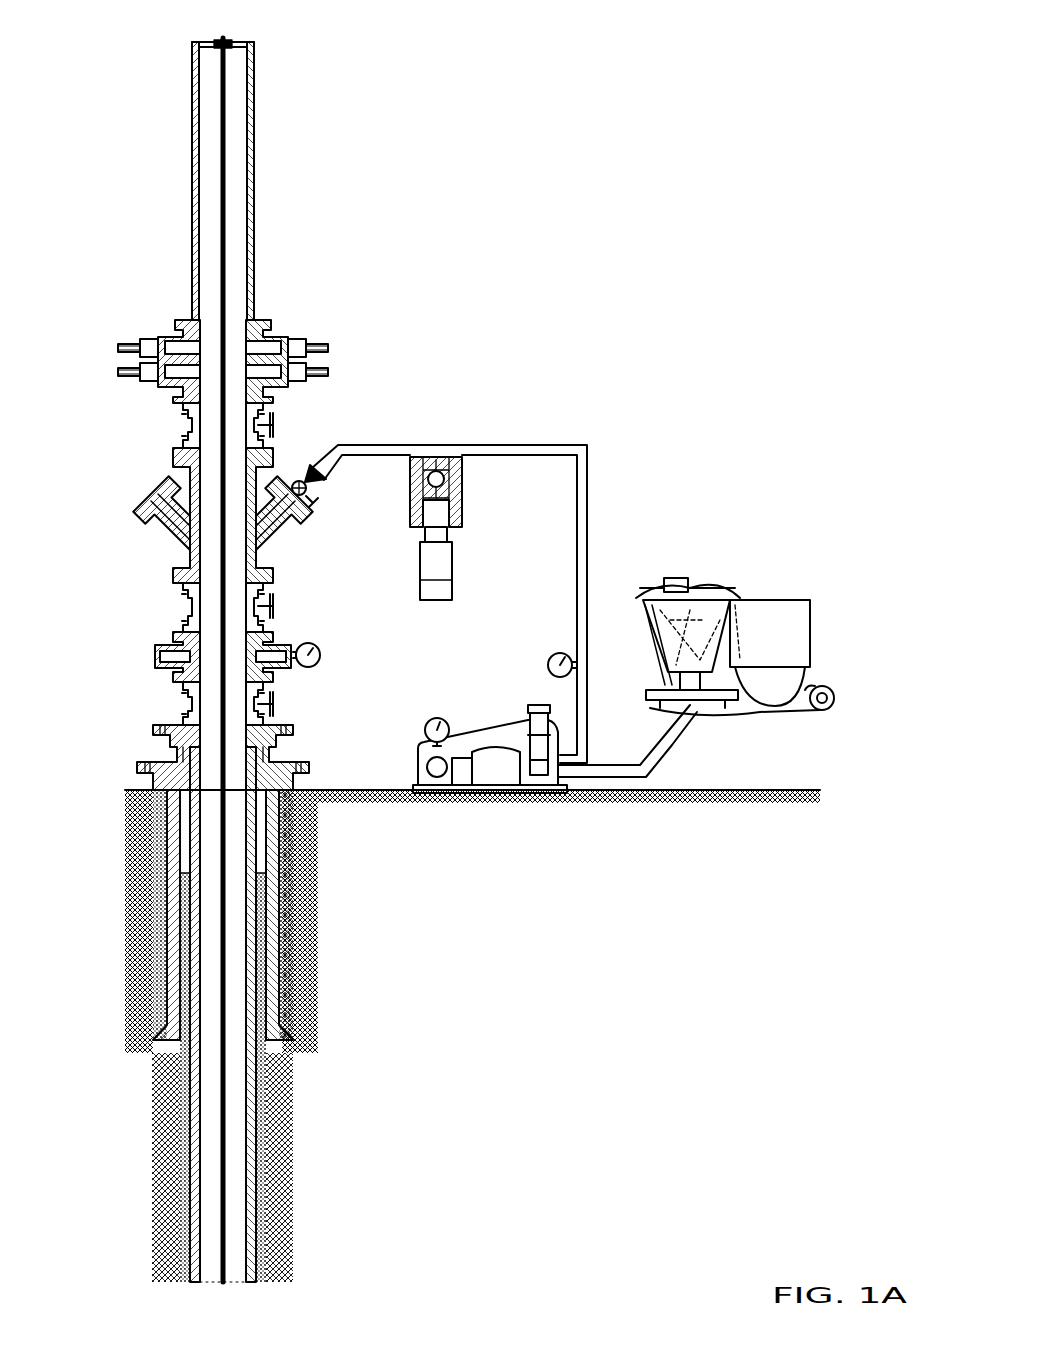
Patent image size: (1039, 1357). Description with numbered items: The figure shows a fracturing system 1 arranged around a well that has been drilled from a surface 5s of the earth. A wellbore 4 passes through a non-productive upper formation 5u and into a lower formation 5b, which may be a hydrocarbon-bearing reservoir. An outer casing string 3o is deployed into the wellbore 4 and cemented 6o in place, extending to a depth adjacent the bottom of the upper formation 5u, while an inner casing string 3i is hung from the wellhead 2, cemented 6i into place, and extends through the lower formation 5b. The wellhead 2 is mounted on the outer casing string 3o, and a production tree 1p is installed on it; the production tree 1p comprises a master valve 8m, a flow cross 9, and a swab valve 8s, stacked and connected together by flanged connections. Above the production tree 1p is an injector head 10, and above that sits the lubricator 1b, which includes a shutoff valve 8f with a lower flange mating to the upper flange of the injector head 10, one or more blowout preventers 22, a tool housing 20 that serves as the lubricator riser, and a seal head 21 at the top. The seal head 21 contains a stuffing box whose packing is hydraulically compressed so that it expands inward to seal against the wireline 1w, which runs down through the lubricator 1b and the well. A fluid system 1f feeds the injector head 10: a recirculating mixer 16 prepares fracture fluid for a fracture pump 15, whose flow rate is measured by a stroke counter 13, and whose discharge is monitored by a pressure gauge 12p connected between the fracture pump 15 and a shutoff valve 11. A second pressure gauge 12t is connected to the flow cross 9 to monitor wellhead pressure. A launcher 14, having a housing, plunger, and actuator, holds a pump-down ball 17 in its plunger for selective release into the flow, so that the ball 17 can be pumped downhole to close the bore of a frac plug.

The fracturing system 1 is at (72, 52).
The lubricator 1b is at (128, 142).
The fluid system 1f is at (722, 334).
The production tree 1p is at (95, 665).
The wireline 1w is at (228, 153).
The seal head 21 is at (232, 40).
The tool housing 20 is at (255, 215).
The blowout preventers 22 is at (278, 334).
The shutoff valve 8f is at (185, 425).
The injector head 10 is at (283, 545).
The shutoff valve 11 is at (314, 503).
The ball 17 is at (442, 478).
The launcher 14 is at (453, 572).
The swab valve 8s is at (185, 598).
The flow cross 9 is at (160, 642).
The pressure gauge 12t is at (321, 655).
The pressure gauge 12p is at (548, 663).
The master valve 8m is at (185, 705).
The wellhead 2 is at (137, 768).
The fracture pump 15 is at (487, 735).
The stroke counter 13 is at (425, 727).
The recirculating mixer 16 is at (777, 596).
The surface 5s is at (750, 790).
The upper formation 5u is at (315, 903).
The cement 6o is at (285, 978).
The outer casing string 3o is at (290, 1042).
The cement 6i is at (182, 1107).
The inner casing string 3i is at (195, 1180).
The lower formation 5b is at (287, 1207).
The wellbore 4 is at (235, 1280).